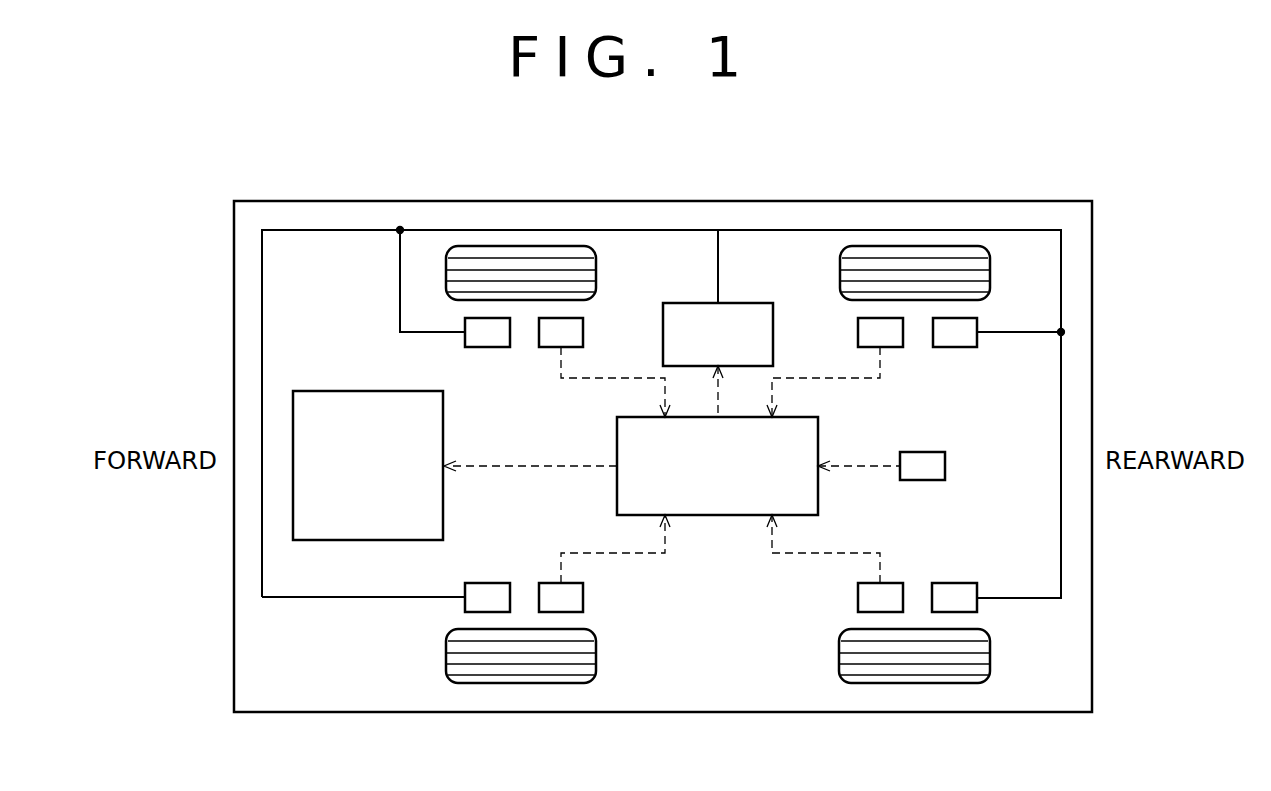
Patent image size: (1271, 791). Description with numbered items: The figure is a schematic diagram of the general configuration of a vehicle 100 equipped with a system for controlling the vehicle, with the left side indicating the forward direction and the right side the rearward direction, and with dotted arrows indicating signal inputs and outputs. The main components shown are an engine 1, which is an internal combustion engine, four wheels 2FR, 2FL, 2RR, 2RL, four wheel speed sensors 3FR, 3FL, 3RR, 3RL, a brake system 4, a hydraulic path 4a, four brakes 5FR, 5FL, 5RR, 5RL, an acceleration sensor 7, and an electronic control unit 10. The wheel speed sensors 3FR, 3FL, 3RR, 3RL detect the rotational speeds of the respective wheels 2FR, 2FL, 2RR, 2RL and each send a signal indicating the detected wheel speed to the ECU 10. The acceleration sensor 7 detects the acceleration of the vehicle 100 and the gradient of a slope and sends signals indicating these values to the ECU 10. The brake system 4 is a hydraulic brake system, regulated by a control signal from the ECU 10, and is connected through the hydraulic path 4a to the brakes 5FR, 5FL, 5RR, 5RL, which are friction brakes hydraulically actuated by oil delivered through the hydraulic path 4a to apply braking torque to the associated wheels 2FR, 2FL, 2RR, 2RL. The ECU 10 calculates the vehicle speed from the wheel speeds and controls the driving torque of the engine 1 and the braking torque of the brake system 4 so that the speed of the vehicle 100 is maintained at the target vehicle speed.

The vehicle 100 is at (695, 201).
The engine 1 is at (343, 391).
The front right wheel 2FR is at (596, 272).
The rear right wheel 2RR is at (840, 272).
The front left wheel 2FL is at (596, 656).
The rear left wheel 2RL is at (839, 656).
The wheel speed sensor 3FR is at (583, 332).
The wheel speed sensor 3RR is at (858, 332).
The wheel speed sensor 3FL is at (583, 598).
The wheel speed sensor 3RL is at (858, 598).
The brake system 4 is at (697, 303).
The hydraulic path 4a is at (328, 230).
The brake 5FR is at (487, 347).
The brake 5RR is at (955, 347).
The brake 5FL is at (486, 583).
The brake 5RL is at (951, 583).
The acceleration sensor 7 is at (945, 466).
The electronic control unit 10 is at (617, 432).